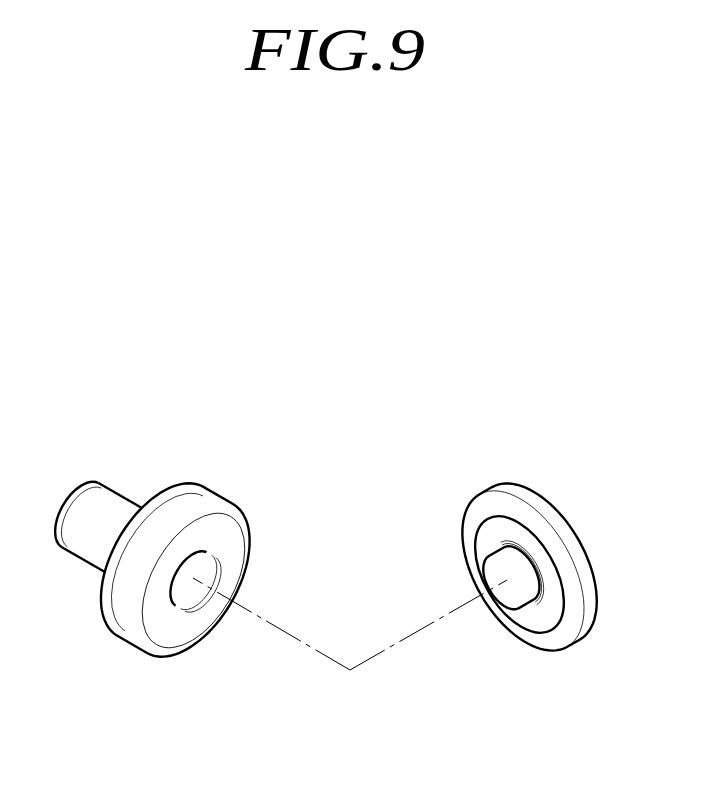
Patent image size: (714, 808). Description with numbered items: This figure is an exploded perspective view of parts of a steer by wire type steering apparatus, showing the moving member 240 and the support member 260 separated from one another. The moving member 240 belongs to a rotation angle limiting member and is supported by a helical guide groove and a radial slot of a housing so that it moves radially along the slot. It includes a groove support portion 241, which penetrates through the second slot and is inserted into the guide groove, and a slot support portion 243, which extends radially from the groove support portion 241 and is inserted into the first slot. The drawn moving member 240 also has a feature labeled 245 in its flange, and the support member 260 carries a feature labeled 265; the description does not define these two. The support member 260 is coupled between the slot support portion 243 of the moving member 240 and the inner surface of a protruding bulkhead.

The moving member 240 is at (75, 455).
The groove support portion 241 is at (108, 507).
The slot support portion 243 is at (196, 622).
The coupling hole 245 is at (211, 571).
The support member 260 is at (568, 470).
The protrusion 265 is at (505, 592).